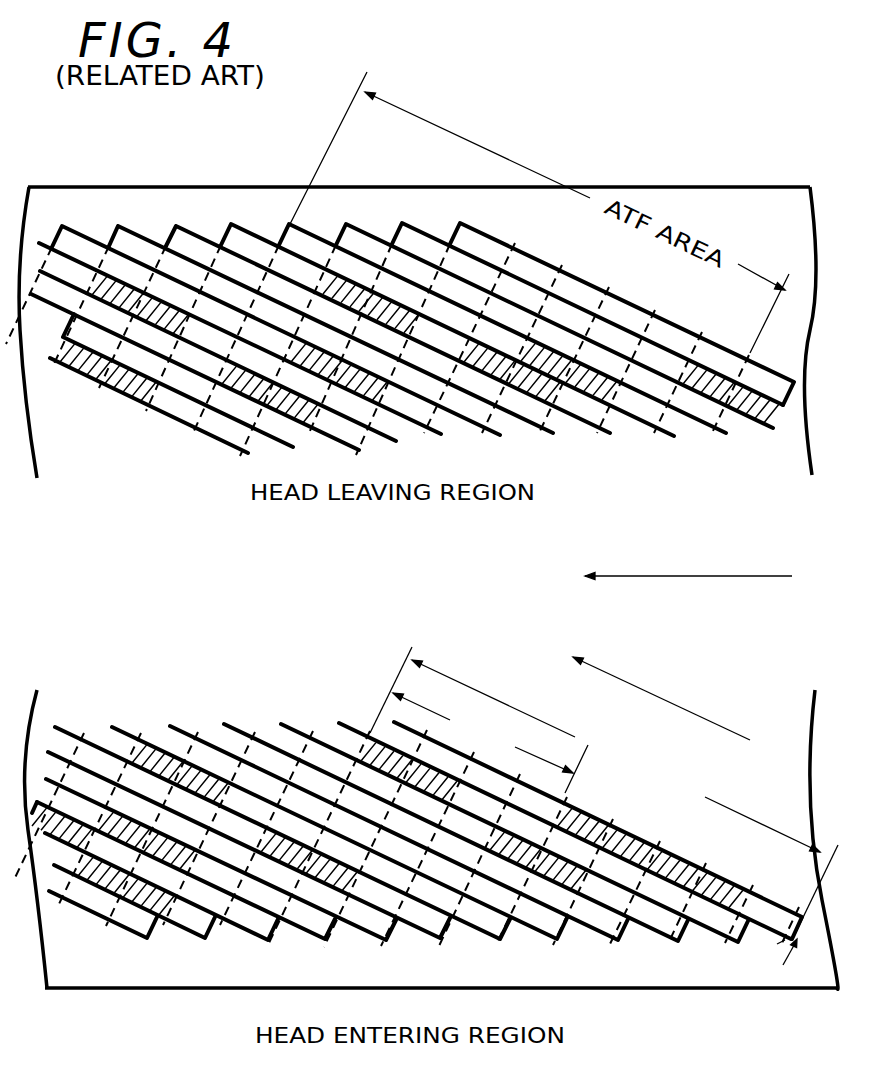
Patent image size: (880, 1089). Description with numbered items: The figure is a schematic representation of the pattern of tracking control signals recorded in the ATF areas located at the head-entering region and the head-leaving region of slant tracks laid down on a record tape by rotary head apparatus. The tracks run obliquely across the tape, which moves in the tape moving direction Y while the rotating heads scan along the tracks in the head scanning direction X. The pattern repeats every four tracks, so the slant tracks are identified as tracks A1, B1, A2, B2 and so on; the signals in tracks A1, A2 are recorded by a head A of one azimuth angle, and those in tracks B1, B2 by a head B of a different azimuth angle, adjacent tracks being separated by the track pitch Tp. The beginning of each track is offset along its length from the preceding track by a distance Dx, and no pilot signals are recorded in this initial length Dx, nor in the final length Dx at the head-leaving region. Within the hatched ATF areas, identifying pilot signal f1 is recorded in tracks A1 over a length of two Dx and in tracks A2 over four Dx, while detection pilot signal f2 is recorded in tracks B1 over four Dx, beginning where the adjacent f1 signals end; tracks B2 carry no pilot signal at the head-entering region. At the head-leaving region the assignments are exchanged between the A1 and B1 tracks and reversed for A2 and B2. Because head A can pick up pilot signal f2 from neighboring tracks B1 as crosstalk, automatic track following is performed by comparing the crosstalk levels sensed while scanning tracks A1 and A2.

The track A1 is at (61, 229).
The track B1 is at (117, 229).
The track A2 is at (175, 229).
The track B2 is at (230, 228).
The head B is at (148, 942).
The head A is at (808, 930).
The head scanning direction X is at (722, 728).
The tape moving direction Y is at (755, 577).
The track offset distance Dx is at (765, 941).
The track pitch Tp is at (803, 944).
The pilot signal f1 is at (419, 629).
The pilot signal f2 is at (247, 562).